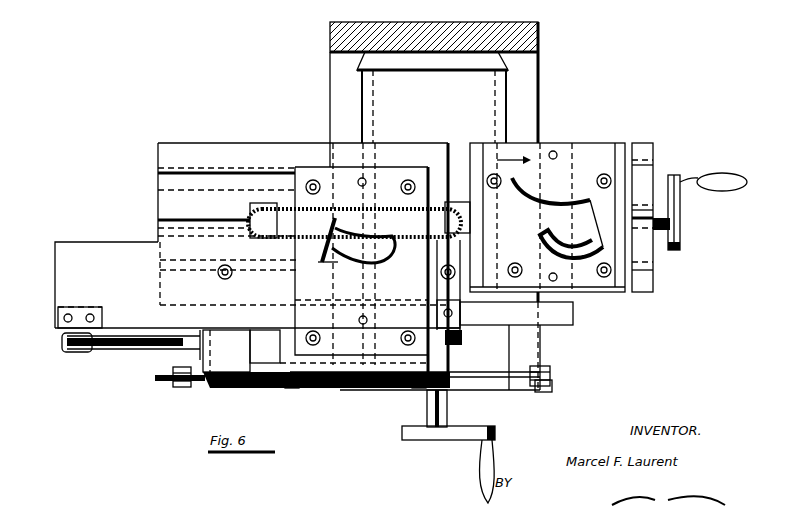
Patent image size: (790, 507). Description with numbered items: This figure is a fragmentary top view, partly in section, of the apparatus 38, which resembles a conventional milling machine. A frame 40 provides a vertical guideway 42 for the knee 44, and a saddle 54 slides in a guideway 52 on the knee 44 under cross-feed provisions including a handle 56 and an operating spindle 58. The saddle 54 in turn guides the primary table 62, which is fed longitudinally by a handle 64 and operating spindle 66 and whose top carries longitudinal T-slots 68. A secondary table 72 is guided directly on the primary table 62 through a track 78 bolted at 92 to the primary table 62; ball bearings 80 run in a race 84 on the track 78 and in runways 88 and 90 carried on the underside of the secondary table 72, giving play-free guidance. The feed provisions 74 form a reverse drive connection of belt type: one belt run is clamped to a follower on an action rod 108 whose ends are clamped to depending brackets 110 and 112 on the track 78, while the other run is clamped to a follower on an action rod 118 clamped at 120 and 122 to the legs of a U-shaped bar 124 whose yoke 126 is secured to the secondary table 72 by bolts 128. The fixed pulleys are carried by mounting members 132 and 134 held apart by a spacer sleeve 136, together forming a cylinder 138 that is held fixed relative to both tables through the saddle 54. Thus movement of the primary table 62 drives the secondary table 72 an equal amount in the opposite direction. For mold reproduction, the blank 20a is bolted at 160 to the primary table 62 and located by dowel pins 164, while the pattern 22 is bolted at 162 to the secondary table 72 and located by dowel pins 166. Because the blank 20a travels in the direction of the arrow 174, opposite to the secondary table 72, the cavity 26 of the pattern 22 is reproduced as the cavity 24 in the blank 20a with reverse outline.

The frame 40 is at (541, 28).
The knee 44 is at (542, 108).
The vertical guideway 42 is at (492, 70).
The guideway 52 is at (362, 100).
The pattern 22 is at (324, 143).
The apparatus 38 is at (293, 100).
The primary table 62 is at (234, 150).
The track 78 is at (125, 250).
The secondary table 72 is at (298, 165).
The ball bearings 80 is at (268, 204).
The runway 88 is at (262, 214).
The race 84 is at (270, 240).
The cavity 26 is at (368, 240).
The bolts 92 is at (225, 265).
The bolts 162 is at (320, 188).
The dowel pins 166 is at (360, 178).
The blank 20a is at (622, 140).
The arrow 174 is at (505, 158).
The bolts 160 is at (490, 176).
The dowel pins 164 is at (554, 151).
The cavity 24 is at (553, 200).
The T-slots 68 is at (640, 220).
The operating spindle 66 is at (660, 232).
The handle 64 is at (702, 175).
The saddle 54 is at (568, 320).
The action rod 108 is at (113, 348).
The depending bracket 110 is at (75, 352).
The feed provisions 74 is at (210, 360).
The spacer sleeve 136 is at (226, 351).
The runway 90 is at (258, 335).
The cylinder 138 is at (230, 390).
The clamp 120 is at (181, 388).
The mounting member 132 is at (198, 388).
The yoke 126 is at (485, 371).
The bolts 128 is at (294, 389).
The mounting member 134 is at (405, 387).
The depending bracket 112 is at (460, 344).
The action rod 118 is at (518, 365).
The U-shaped bar 124 is at (552, 373).
The clamp 122 is at (544, 392).
The operating spindle 58 is at (448, 410).
The handle 56 is at (497, 432).